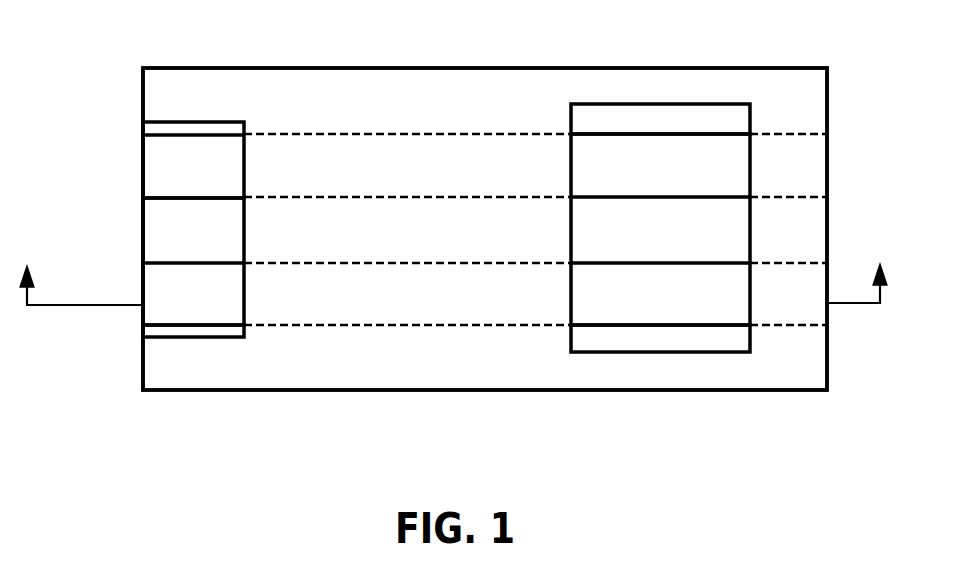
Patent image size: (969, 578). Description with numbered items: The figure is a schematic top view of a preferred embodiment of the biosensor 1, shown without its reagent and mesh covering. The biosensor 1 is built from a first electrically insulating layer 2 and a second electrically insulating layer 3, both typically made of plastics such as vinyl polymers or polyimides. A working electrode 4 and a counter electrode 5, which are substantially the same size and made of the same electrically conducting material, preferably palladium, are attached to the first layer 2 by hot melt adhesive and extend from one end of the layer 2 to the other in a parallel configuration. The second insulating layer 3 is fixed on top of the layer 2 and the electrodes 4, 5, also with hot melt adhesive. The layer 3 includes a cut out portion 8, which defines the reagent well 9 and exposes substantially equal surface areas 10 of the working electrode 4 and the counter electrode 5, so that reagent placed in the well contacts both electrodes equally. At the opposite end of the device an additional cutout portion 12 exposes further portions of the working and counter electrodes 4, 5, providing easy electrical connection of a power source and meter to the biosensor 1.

The biosensor 1 is at (832, 98).
The first electrically insulating layer 2 is at (801, 36).
The second electrically insulating layer 3 is at (792, 354).
The working electrode 4 is at (157, 276).
The counter electrode 5 is at (157, 149).
The cut out portion 8 is at (717, 104).
The reagent well 9 is at (706, 340).
The exposed surface areas of electrodes 10 is at (634, 173).
The additional cutout portion 12 is at (167, 338).